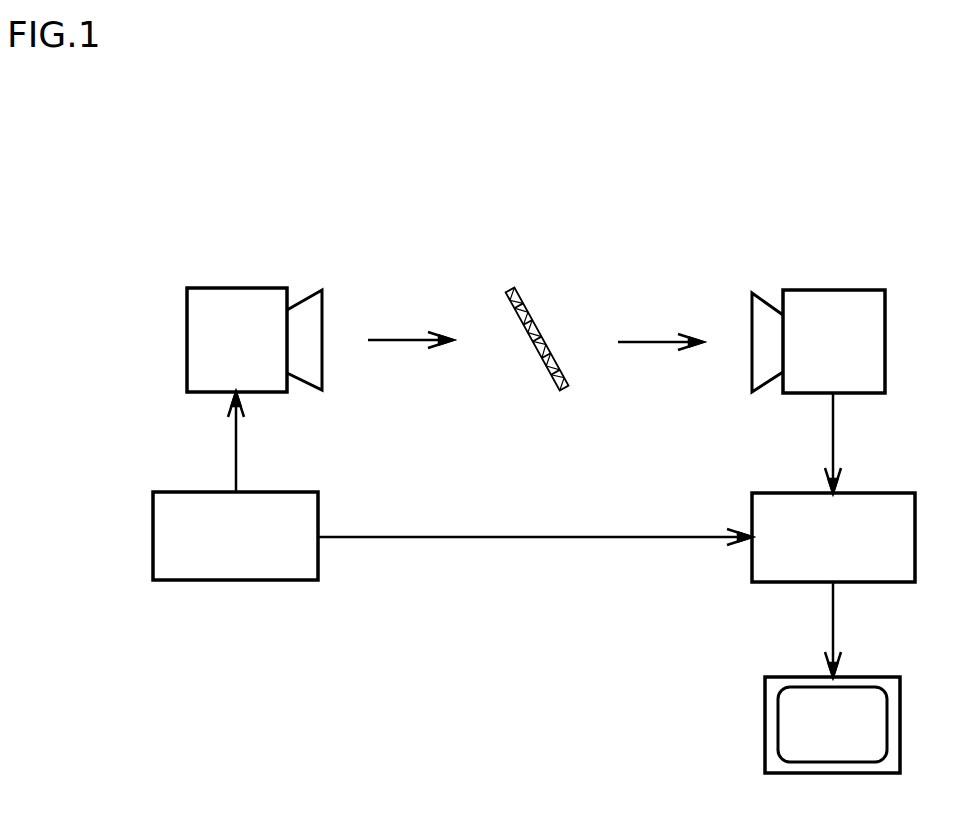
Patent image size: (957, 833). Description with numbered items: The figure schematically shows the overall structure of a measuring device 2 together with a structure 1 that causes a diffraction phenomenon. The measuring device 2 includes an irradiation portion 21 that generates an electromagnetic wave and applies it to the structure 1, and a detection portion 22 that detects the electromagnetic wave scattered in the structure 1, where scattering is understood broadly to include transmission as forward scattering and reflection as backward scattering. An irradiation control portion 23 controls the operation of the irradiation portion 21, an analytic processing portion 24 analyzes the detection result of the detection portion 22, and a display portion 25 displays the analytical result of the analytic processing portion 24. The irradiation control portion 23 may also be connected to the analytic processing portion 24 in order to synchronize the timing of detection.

The structure 1 is at (563, 398).
The measuring device 2 is at (172, 147).
The irradiation portion 21 is at (238, 288).
The detection portion 22 is at (831, 290).
The irradiation control portion 23 is at (235, 580).
The analytic processing portion 24 is at (892, 493).
The display portion 25 is at (885, 677).